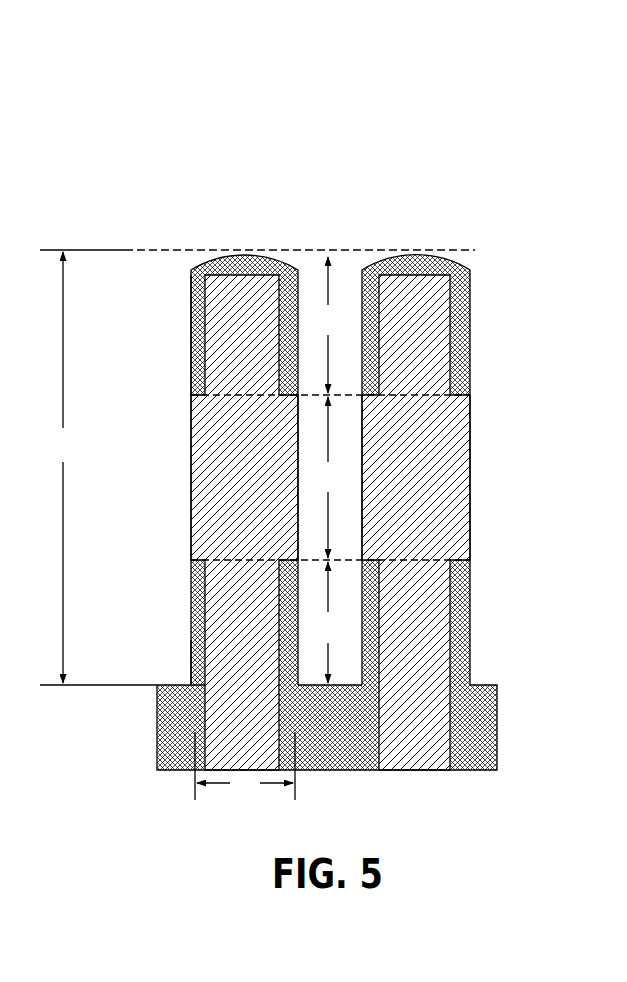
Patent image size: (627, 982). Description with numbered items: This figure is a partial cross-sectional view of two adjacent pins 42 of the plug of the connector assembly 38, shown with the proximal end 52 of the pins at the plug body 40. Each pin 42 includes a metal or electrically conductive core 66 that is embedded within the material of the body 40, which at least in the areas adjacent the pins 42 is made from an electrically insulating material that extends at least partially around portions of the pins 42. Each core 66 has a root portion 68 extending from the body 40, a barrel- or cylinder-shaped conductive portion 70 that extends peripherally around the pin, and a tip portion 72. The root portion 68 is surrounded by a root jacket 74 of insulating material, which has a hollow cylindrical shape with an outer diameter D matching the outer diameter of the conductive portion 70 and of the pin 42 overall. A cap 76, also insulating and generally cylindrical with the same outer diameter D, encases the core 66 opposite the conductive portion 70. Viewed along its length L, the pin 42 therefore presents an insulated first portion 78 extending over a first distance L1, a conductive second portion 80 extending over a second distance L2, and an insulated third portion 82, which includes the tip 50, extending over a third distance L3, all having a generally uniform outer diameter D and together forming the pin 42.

The electrode tip assembly 38 is at (327, 100).
The body 40 is at (475, 732).
The pin 42 is at (467, 221).
The tip 50 is at (243, 250).
The proximal end 52 is at (195, 665).
The core 66 is at (415, 735).
The root portion 68 is at (415, 664).
The conductive portion 70 is at (430, 480).
The tip portion 72 is at (430, 345).
The root jacket 74 is at (460, 598).
The cap 76 is at (460, 288).
The first portion 78 is at (193, 605).
The second portion 80 is at (191, 478).
The third portion 82 is at (191, 328).